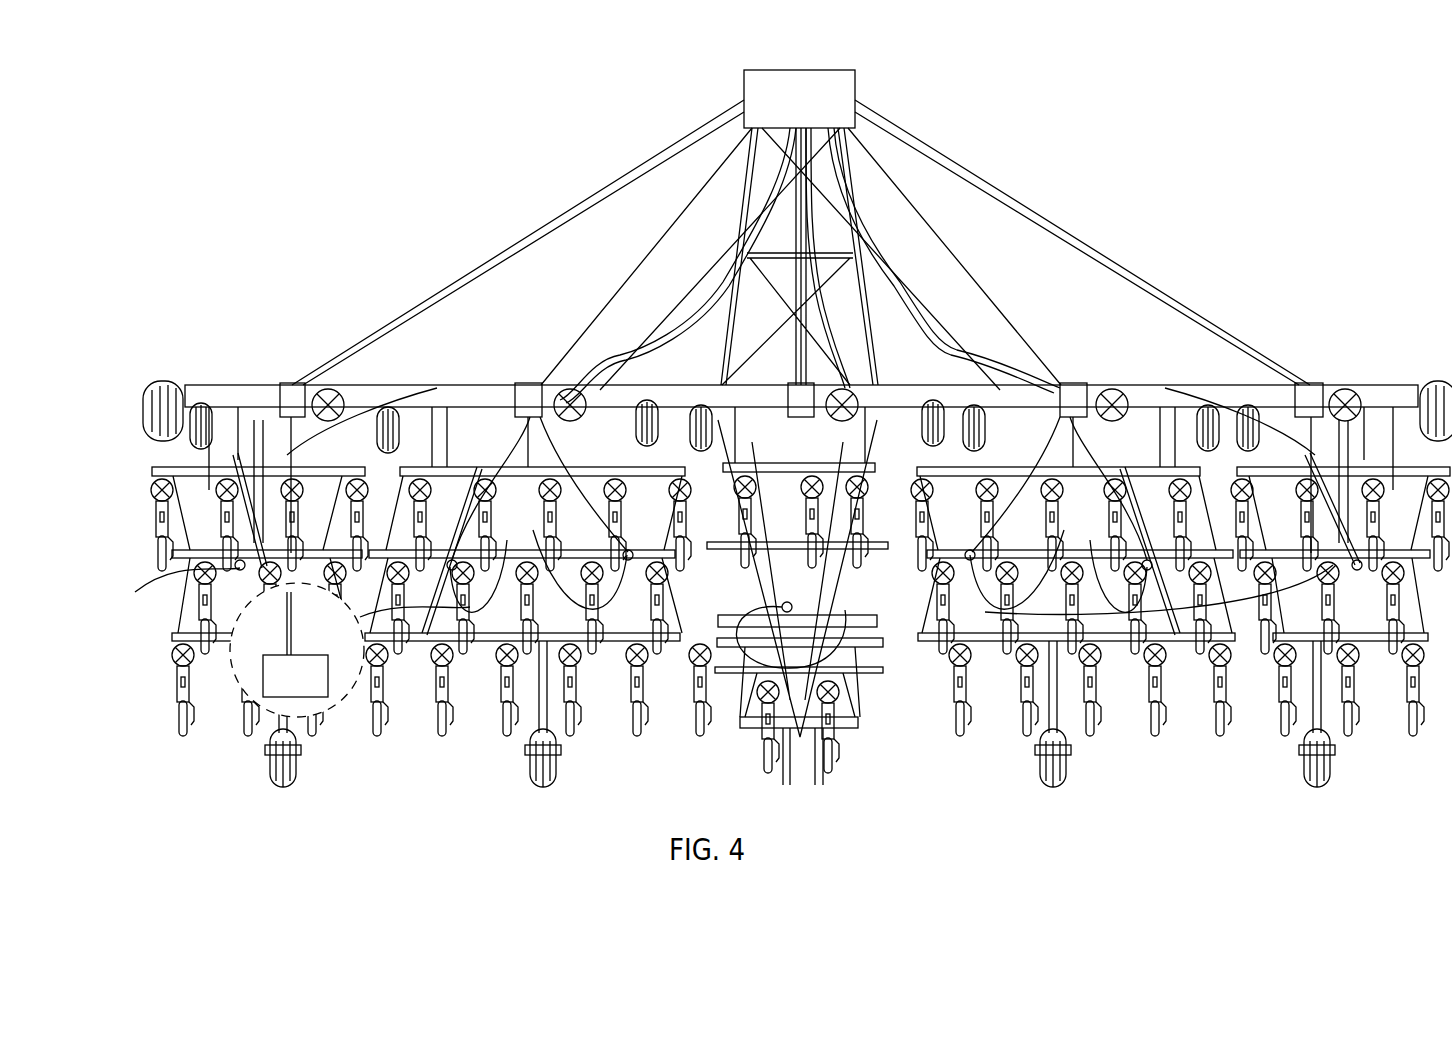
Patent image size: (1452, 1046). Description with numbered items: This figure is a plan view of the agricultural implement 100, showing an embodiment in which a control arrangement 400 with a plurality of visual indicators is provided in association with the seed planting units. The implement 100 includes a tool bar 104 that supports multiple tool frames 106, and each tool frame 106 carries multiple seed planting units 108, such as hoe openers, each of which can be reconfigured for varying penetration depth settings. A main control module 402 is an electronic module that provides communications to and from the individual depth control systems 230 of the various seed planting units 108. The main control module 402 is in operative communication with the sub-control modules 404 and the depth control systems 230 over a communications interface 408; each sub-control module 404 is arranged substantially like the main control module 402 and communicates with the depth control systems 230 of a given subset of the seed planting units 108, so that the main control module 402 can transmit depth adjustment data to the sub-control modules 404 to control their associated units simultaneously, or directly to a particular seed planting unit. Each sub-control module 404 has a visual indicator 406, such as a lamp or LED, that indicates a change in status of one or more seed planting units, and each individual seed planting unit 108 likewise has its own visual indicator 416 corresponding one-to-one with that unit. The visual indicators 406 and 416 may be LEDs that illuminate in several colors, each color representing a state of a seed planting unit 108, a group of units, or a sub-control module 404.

The agricultural implement 100 is at (556, 231).
The tool bar 104 is at (1270, 395).
The tool frame 106 is at (982, 641).
The seed planting unit 108 is at (225, 775).
The depth control system 230 is at (297, 650).
The control system of the agricultural implement 400 is at (1036, 129).
The main control module 402 is at (857, 86).
The sub-control module 404 is at (291, 381).
The visual indicator 406 is at (330, 388).
The communications interface 408 is at (365, 390).
The visual indicator 416 is at (258, 578).